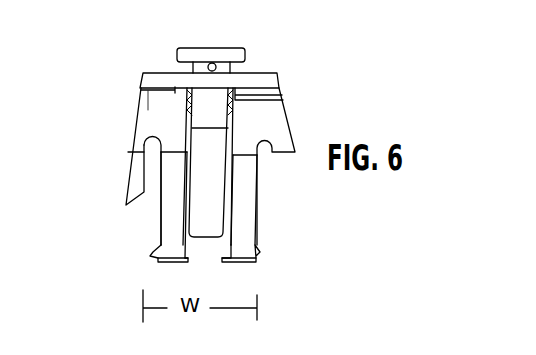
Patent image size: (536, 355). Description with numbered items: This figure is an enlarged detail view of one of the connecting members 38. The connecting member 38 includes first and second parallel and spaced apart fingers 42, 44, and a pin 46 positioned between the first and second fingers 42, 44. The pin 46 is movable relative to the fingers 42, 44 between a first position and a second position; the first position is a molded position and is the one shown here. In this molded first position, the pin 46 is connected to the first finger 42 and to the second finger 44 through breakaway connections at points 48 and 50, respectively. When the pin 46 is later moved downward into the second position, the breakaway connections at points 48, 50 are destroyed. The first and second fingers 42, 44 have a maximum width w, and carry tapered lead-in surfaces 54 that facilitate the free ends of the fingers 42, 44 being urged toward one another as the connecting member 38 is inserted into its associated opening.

The connecting member 38 is at (224, 145).
The first finger 42 is at (165, 222).
The second finger 44 is at (245, 226).
The pin 46 is at (296, 22).
The breakaway connection point 48 is at (187, 115).
The breakaway connection point 50 is at (233, 122).
The tapered lead-in surface 54 is at (150, 256).